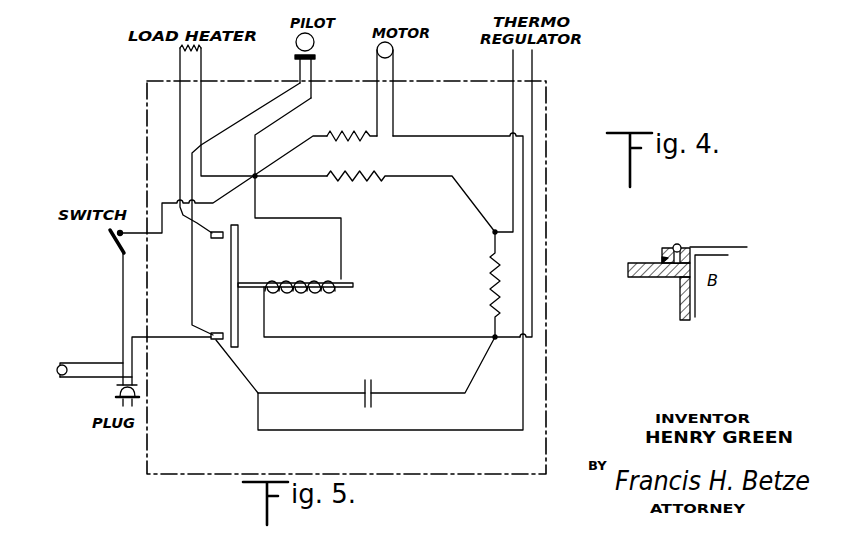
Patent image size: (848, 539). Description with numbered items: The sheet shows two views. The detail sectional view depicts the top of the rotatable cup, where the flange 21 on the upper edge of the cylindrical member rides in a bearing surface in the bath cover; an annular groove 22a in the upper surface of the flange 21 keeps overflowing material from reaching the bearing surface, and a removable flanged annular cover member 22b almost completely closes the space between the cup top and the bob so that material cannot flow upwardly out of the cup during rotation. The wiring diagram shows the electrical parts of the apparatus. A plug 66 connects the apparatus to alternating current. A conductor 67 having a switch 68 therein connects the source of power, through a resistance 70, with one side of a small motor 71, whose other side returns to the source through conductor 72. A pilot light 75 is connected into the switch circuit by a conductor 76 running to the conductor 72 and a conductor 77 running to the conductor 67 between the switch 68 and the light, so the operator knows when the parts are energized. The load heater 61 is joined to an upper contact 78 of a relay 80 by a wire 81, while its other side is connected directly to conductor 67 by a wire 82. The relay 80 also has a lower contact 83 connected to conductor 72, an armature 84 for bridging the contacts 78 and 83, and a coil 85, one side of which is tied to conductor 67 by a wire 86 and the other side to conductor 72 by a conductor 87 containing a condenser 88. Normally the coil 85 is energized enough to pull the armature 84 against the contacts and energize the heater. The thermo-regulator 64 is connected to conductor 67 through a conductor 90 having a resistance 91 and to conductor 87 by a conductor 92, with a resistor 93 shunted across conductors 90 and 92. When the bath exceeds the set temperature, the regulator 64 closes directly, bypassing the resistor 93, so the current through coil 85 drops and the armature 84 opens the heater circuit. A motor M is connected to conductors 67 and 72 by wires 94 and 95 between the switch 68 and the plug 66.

In FIG. 5, the load heater 61 is at (178, 56).
In FIG. 5, the thermo-regulator 64 is at (518, 62).
In FIG. 5, the plug 66 is at (118, 390).
In FIG. 5, the conductor 67 is at (227, 197).
In FIG. 5, the switch 68 is at (113, 250).
In FIG. 5, the resistance 70 is at (345, 134).
In FIG. 5, the motor 71 is at (394, 50).
In FIG. 5, the conductor 72 is at (450, 136).
In FIG. 5, the pilot light 75 is at (297, 50).
In FIG. 5, the conductor 76 is at (273, 100).
In FIG. 5, the conductor 77 is at (313, 93).
In FIG. 5, the upper contact 78 is at (218, 240).
In FIG. 5, the relay 80 is at (252, 279).
In FIG. 5, the wire or conductor 81 is at (178, 115).
In FIG. 5, the wire 82 is at (202, 107).
In FIG. 5, the lower contact 83 is at (218, 342).
In FIG. 5, the armature 84 is at (240, 233).
In FIG. 5, the coil 85 is at (305, 277).
In FIG. 5, the wire 86 is at (317, 217).
In FIG. 5, the conductor 87 is at (388, 313).
In FIG. 5, the condenser 88 is at (380, 380).
In FIG. 5, the conductor 90 is at (512, 97).
In FIG. 5, the resistance 91 is at (367, 170).
In FIG. 5, the conductor 92 is at (533, 95).
In FIG. 5, the resistor 93 is at (492, 258).
In FIG. 5, the wire 94 is at (103, 362).
In FIG. 5, the wire 95 is at (72, 378).
In FIG. 5, the motor M is at (58, 366).
In FIG. 4, the flange 21 is at (633, 277).
In FIG. 4, the annular groove 22a is at (662, 260).
In FIG. 4, the removable flanged annular cover member 22b is at (690, 248).